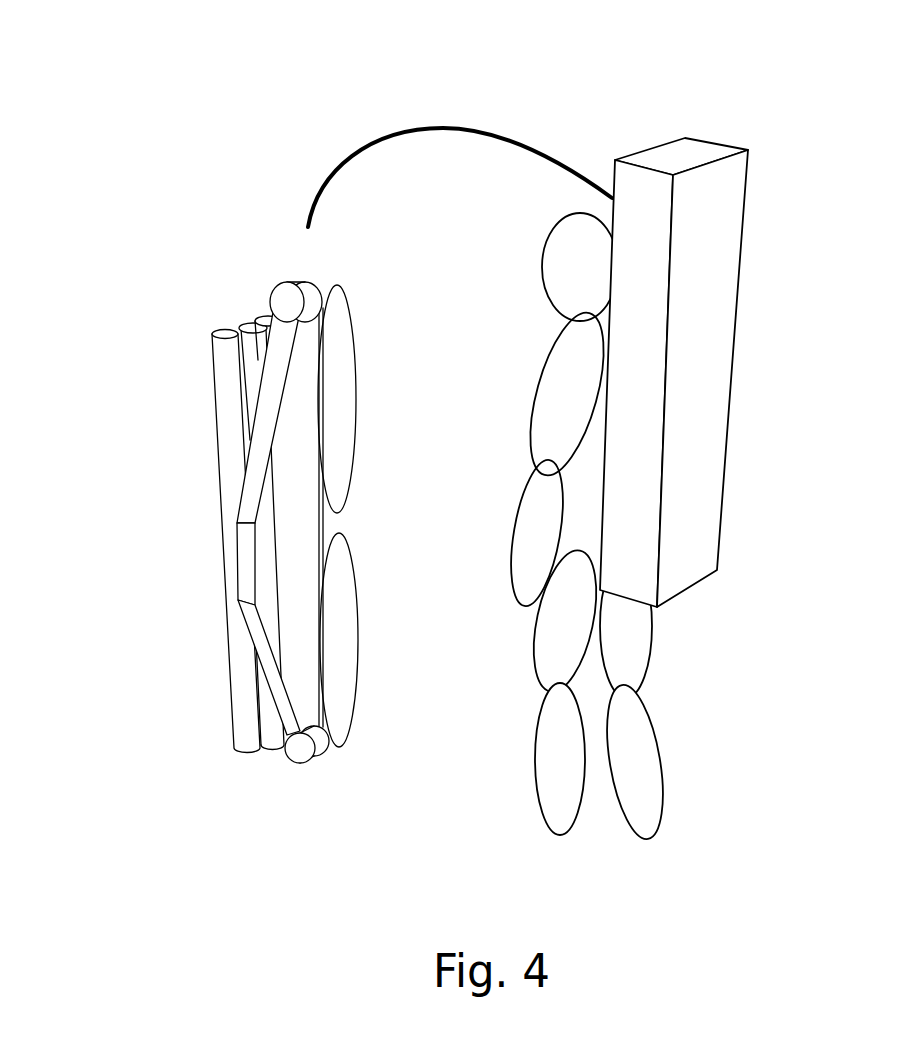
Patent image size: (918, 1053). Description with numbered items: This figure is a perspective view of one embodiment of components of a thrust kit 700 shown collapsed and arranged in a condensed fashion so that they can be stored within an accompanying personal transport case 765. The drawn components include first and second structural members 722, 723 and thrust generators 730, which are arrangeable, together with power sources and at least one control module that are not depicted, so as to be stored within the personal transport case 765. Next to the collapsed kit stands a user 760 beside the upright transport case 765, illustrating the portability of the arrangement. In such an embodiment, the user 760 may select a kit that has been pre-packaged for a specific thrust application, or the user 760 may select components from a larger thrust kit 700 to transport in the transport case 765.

The thrust kit 700 is at (119, 75).
The first structural member 722 is at (277, 558).
The second structural member 723 is at (253, 358).
The thrust generators 730 is at (343, 260).
The user 760 is at (557, 383).
The personal transport case 765 is at (703, 340).